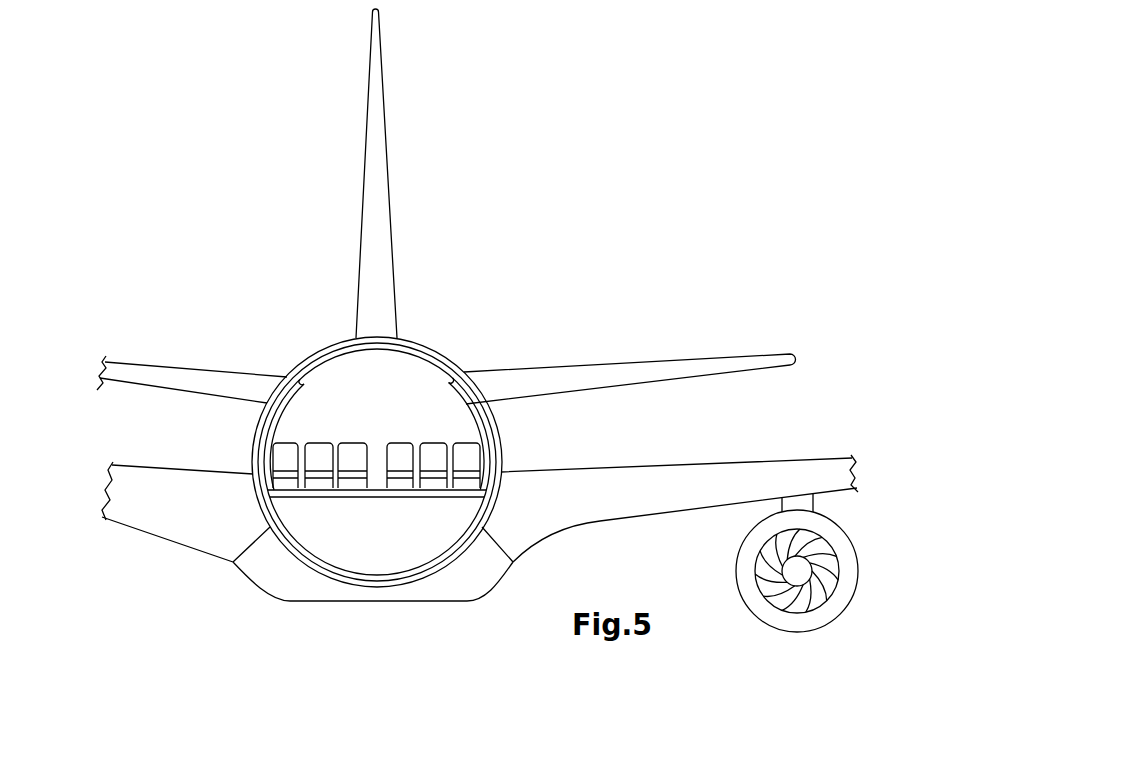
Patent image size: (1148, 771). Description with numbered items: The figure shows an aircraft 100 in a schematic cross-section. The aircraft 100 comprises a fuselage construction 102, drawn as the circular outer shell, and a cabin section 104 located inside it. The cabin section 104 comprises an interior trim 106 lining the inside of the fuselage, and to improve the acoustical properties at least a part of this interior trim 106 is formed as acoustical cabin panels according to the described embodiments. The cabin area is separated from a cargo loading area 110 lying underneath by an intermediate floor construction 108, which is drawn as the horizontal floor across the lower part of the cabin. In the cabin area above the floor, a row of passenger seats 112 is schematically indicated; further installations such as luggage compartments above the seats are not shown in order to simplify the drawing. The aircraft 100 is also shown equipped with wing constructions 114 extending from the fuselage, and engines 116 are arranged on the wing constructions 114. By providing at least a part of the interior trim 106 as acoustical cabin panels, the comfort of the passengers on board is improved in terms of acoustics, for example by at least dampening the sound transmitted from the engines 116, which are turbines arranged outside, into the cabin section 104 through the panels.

The aircraft 100 is at (455, 268).
The fuselage construction 102 is at (433, 353).
The cabin section 104 is at (398, 409).
The interior trim 106 is at (475, 400).
The intermediate floor construction 108 is at (265, 507).
The cargo loading area 110 is at (398, 539).
The passenger seats 112 is at (282, 455).
The wing constructions 114 is at (697, 480).
The engines 116 is at (842, 525).